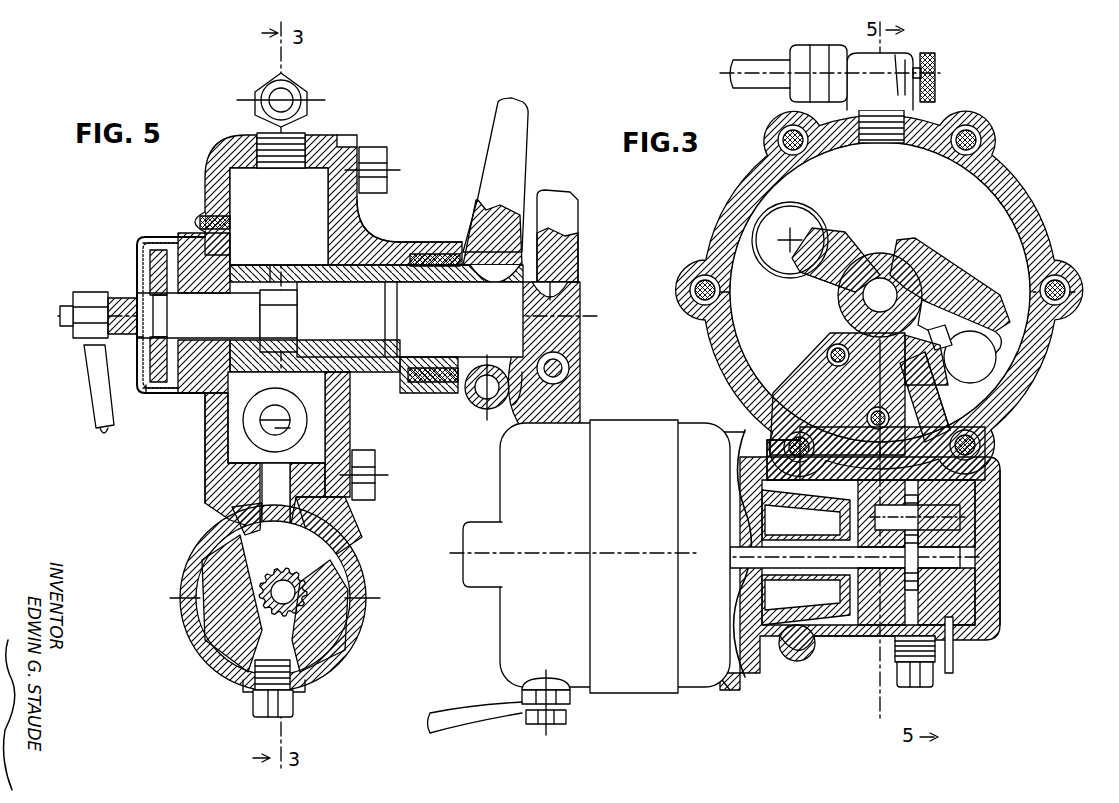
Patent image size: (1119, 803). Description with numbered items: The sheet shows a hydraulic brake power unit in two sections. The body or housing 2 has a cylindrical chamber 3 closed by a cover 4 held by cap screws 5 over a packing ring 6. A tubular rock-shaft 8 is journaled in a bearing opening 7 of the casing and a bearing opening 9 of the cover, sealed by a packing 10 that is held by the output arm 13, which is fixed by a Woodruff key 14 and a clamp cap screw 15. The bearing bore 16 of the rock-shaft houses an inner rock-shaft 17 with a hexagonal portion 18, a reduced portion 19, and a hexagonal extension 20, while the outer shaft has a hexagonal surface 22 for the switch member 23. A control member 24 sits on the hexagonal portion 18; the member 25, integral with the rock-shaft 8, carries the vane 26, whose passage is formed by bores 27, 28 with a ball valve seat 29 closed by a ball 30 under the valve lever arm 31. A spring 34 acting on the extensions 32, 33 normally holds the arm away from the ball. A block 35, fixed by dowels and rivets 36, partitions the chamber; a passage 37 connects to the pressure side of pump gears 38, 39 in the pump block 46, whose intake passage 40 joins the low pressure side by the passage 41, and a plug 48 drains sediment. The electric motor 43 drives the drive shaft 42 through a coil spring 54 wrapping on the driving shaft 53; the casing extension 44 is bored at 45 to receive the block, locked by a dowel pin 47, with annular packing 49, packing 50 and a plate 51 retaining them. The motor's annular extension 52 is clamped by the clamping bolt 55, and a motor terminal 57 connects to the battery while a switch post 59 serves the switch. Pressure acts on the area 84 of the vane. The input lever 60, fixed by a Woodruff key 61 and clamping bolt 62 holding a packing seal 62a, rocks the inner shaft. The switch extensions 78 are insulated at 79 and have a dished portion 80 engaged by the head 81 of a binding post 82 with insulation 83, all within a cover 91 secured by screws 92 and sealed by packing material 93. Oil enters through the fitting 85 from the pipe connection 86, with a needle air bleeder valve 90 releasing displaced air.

In FIG. 5, the body or housing 2 is at (210, 183).
In FIG. 3, the body or housing 2 is at (1008, 180).
In FIG. 5, the cylindrical chamber 3 is at (279, 216).
In FIG. 3, the cylindrical chamber 3 is at (880, 292).
In FIG. 5, the cover 4 is at (352, 240).
In FIG. 5, the cap screws 5 is at (374, 153).
In FIG. 3, the cap screws 5 is at (982, 136).
In FIG. 5, the packing ring 6 is at (332, 146).
In FIG. 5, the bearing opening 7 is at (203, 424).
In FIG. 5, the rock-shaft 8 is at (350, 372).
In FIG. 5, the bearing opening 9 is at (404, 250).
In FIG. 5, the packing 10 is at (440, 395).
In FIG. 5, the arm 13 is at (500, 158).
In FIG. 5, the Woodruff key 14 is at (495, 270).
In FIG. 5, the clamp cap screw 15 is at (482, 410).
In FIG. 5, the bearing bore 16 is at (345, 272).
In FIG. 5, the rock-shaft 17 is at (430, 320).
In FIG. 5, the reduced hexagonal portion 18 is at (282, 320).
In FIG. 3, the reduced hexagonal portion 18 is at (888, 258).
In FIG. 5, the reduced portion 19 is at (198, 315).
In FIG. 5, the hexagonal extension 20 is at (167, 312).
In FIG. 5, the reduced hexagonal surface 22 is at (204, 263).
In FIG. 5, the switch member 23 is at (204, 366).
In FIG. 5, the control member 24 is at (283, 266).
In FIG. 3, the control member 24 is at (912, 262).
In FIG. 3, the member 25 is at (845, 312).
In FIG. 5, the radial extension 26 is at (276, 417).
In FIG. 3, the radial extension 26 is at (975, 403).
In FIG. 5, the bore 27 is at (270, 402).
In FIG. 3, the bore 27 is at (960, 420).
In FIG. 3, the bore 28 is at (942, 333).
In FIG. 3, the ball valve seat 29 is at (926, 360).
In FIG. 3, the ball 30 is at (970, 357).
In FIG. 3, the valve lever arm 31 is at (990, 308).
In FIG. 3, the extension 32 is at (846, 248).
In FIG. 3, the extension 33 is at (827, 275).
In FIG. 3, the spring 34 is at (812, 218).
In FIG. 3, the block 35 is at (837, 394).
In FIG. 3, the dowels and rivets 36 is at (849, 355).
In FIG. 5, the passage 37 is at (300, 499).
In FIG. 3, the passage 37 is at (988, 462).
In FIG. 5, the pump gear 38 is at (265, 479).
In FIG. 3, the pump gear 38 is at (945, 500).
In FIG. 5, the pump gear 39 is at (303, 616).
In FIG. 3, the pump gear 39 is at (922, 548).
In FIG. 5, the passage 40 is at (213, 628).
In FIG. 5, the passage 41 is at (232, 512).
In FIG. 3, the passage 41 is at (775, 412).
In FIG. 3, the drive shaft 42 is at (881, 552).
In FIG. 3, the electric motor 43 is at (630, 685).
In FIG. 3, the extension 44 is at (985, 605).
In FIG. 5, the bore 45 is at (340, 638).
In FIG. 3, the bore 45 is at (895, 660).
In FIG. 5, the pump block 46 is at (205, 578).
In FIG. 3, the pump block 46 is at (975, 575).
In FIG. 3, the dowel pin 47 is at (975, 645).
In FIG. 5, the plug 48 is at (282, 708).
In FIG. 3, the plug 48 is at (925, 675).
In FIG. 3, the annular packing 49 is at (855, 650).
In FIG. 3, the packing 50 is at (887, 568).
In FIG. 3, the plate 51 is at (876, 453).
In FIG. 3, the annular extension 52 is at (783, 460).
In FIG. 3, the driving shaft 53 is at (792, 548).
In FIG. 3, the coil spring 54 is at (805, 577).
In FIG. 3, the clamping bolt 55 is at (797, 655).
In FIG. 3, the motor terminal 57 is at (560, 715).
In FIG. 5, the switch post 59 is at (84, 296).
In FIG. 5, the input lever 60 is at (558, 222).
In FIG. 5, the Woodruff key 61 is at (572, 286).
In FIG. 5, the clamping bolt 62 is at (566, 372).
In FIG. 5, the packing seal 62a is at (526, 395).
In FIG. 5, the extensions 78 is at (160, 243).
In FIG. 5, the insulation 79 is at (137, 246).
In FIG. 5, the dished portion 80 is at (140, 337).
In FIG. 5, the head 81 is at (150, 290).
In FIG. 5, the binding post 82 is at (62, 314).
In FIG. 5, the insulation 83 is at (125, 340).
In FIG. 3, the area 84 is at (884, 397).
In FIG. 5, the fitting 85 is at (263, 128).
In FIG. 3, the fitting 85 is at (890, 75).
In FIG. 5, the pipe connection 86 is at (293, 84).
In FIG. 3, the pipe connection 86 is at (768, 68).
In FIG. 3, the needle air bleeder valve 90 is at (937, 65).
In FIG. 5, the cover 91 is at (148, 396).
In FIG. 5, the screws 92 is at (200, 222).
In FIG. 5, the packing material 93 is at (225, 212).